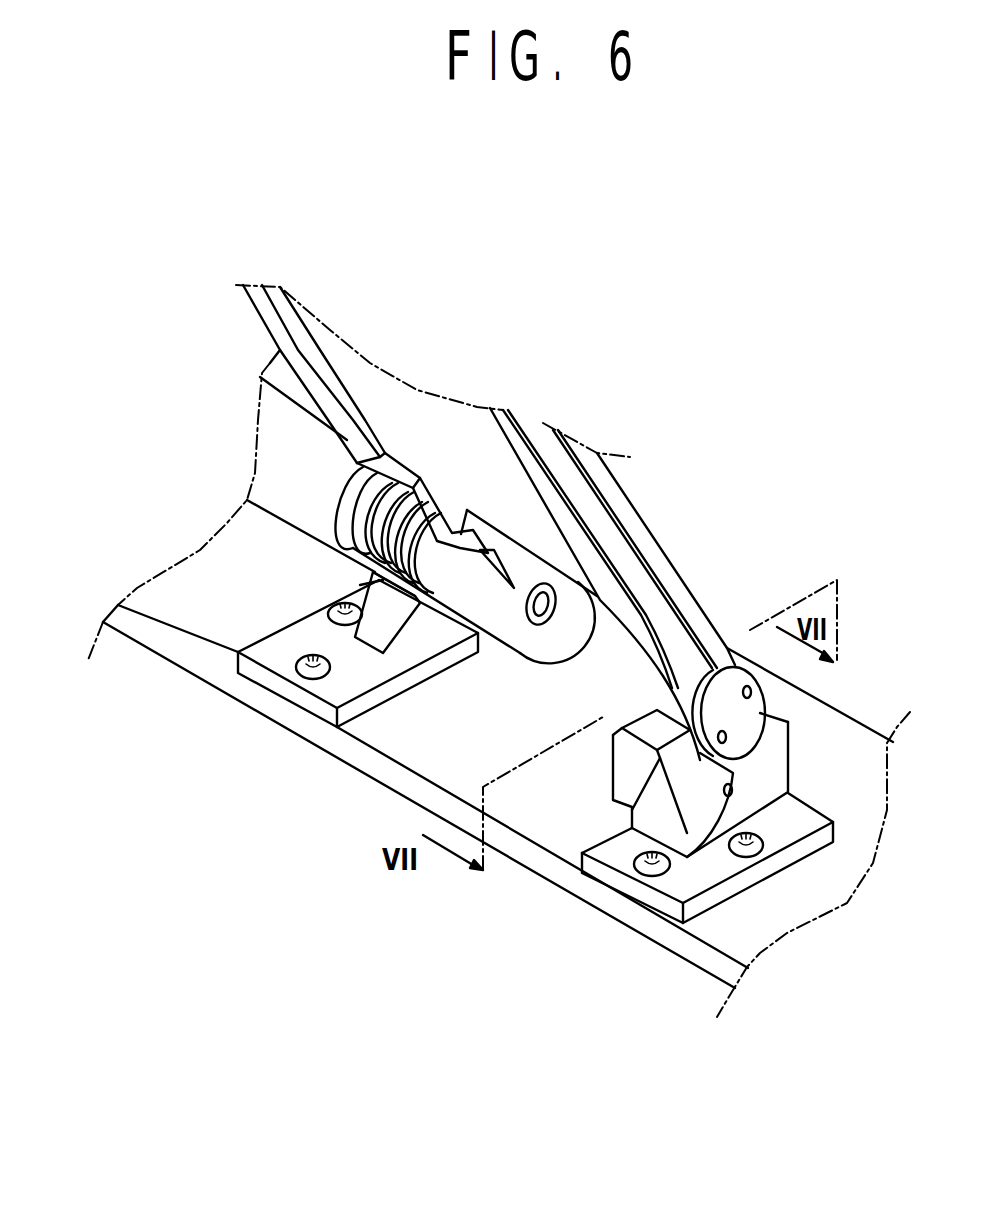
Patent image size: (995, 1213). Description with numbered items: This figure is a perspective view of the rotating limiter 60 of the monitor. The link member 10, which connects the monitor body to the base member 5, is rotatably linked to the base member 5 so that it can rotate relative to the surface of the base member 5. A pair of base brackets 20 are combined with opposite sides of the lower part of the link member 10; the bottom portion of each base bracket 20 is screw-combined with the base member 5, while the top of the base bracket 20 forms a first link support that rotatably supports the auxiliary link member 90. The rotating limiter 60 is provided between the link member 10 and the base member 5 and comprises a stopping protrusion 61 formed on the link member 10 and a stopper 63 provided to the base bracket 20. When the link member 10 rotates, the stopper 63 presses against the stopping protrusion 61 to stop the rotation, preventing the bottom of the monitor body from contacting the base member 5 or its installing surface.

The base member 5 is at (720, 940).
The link member 10 is at (420, 408).
The base bracket 20 is at (318, 690).
The rotating limiter 60 is at (642, 853).
The stopping protrusion 61 is at (643, 737).
The stopper 63 is at (670, 763).
The auxiliary link member 90 is at (632, 578).